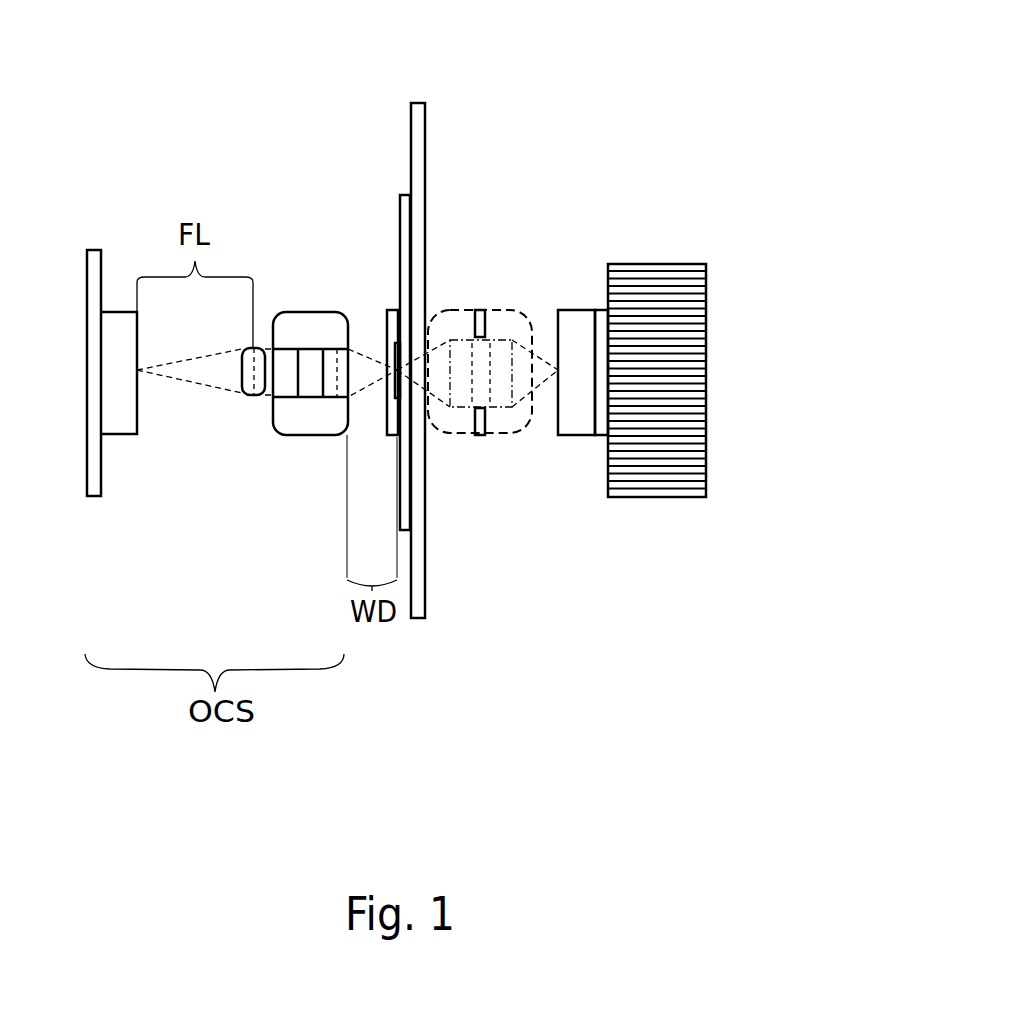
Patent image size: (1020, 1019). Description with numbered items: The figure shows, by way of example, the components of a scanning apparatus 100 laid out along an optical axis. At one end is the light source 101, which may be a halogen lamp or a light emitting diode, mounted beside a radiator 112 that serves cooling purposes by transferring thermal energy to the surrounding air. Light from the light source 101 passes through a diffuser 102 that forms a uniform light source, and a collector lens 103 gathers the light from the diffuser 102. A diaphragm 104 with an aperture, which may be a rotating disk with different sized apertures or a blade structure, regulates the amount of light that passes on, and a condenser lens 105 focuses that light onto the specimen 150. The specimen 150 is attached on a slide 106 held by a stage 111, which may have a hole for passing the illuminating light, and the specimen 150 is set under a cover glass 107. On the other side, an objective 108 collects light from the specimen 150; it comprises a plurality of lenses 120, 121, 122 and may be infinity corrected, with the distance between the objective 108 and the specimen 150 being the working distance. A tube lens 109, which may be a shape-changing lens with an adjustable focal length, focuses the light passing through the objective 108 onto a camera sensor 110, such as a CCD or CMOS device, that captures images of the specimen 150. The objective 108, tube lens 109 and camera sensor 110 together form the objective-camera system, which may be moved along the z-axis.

The scanning apparatus 100 is at (640, 68).
The light source 101 is at (600, 310).
The diffuser 102 is at (565, 420).
The collector lens 103 is at (530, 324).
The diaphragm 104 is at (486, 312).
The condenser lens 105 is at (444, 425).
The slide 106 is at (401, 195).
The cover glass 107 is at (396, 310).
The objective 108 is at (283, 425).
The tube lens 109 is at (249, 395).
The camera sensor 110 is at (131, 418).
The stage 111 is at (416, 103).
The radiator 112 is at (690, 278).
The lens 120 is at (313, 392).
The lens 121 is at (280, 355).
The lens 122 is at (337, 353).
The specimen 150 is at (396, 433).